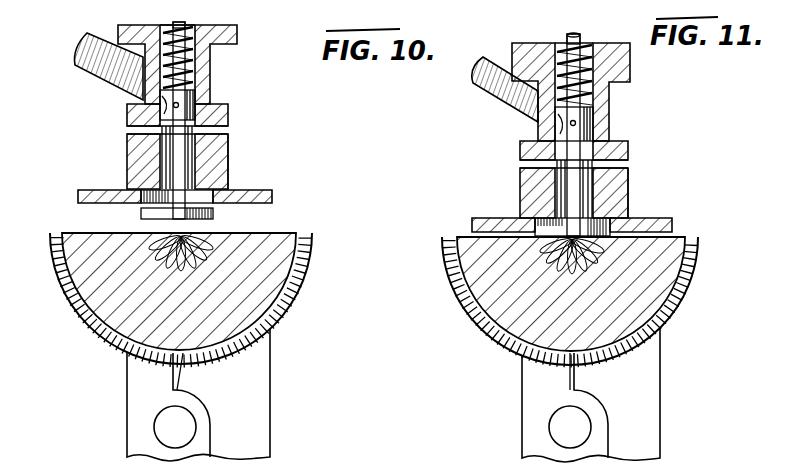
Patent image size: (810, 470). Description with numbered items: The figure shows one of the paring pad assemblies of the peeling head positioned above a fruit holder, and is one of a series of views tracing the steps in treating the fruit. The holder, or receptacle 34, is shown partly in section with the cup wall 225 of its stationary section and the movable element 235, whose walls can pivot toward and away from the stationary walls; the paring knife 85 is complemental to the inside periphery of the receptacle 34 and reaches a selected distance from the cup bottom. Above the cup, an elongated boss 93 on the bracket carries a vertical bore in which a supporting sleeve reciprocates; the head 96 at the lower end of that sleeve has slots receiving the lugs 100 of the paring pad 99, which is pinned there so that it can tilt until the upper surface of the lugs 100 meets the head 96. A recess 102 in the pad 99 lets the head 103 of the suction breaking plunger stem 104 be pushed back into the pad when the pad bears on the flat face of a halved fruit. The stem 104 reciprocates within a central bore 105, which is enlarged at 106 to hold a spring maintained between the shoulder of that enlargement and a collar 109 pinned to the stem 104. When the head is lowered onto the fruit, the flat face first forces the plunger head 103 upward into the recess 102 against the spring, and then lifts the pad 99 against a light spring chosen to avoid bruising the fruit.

In FIG. 10, the receptacle 34 is at (82, 336).
In FIG. 11, the receptacle 34 is at (507, 355).
In FIG. 10, the paring knife 85 is at (143, 97).
In FIG. 11, the paring knife 85 is at (493, 87).
In FIG. 10, the elongated boss 93 is at (237, 32).
In FIG. 11, the elongated boss 93 is at (632, 58).
In FIG. 10, the head 96 is at (140, 115).
In FIG. 11, the head 96 is at (522, 147).
In FIG. 10, the paring pad 99 is at (268, 190).
In FIG. 11, the paring pad 99 is at (672, 222).
In FIG. 10, the lug 100 is at (140, 157).
In FIG. 11, the lug 100 is at (520, 175).
In FIG. 10, the recess 102 is at (222, 183).
In FIG. 11, the recess 102 is at (620, 213).
In FIG. 10, the head 103 is at (213, 212).
In FIG. 11, the head 103 is at (548, 230).
In FIG. 10, the suction breaking plunger stem 104 is at (175, 143).
In FIG. 11, the suction breaking plunger stem 104 is at (572, 153).
In FIG. 10, the central bore 105 is at (188, 72).
In FIG. 11, the central bore 105 is at (595, 90).
In FIG. 10, the enlarged bore portion 106 is at (163, 32).
In FIG. 11, the enlarged bore portion 106 is at (565, 43).
In FIG. 10, the collar 109 is at (182, 100).
In FIG. 11, the collar 109 is at (593, 133).
In FIG. 10, the cup wall 225 is at (67, 283).
In FIG. 11, the cup wall 225 is at (457, 278).
In FIG. 10, the movable element 235 is at (298, 283).
In FIG. 11, the movable element 235 is at (688, 297).